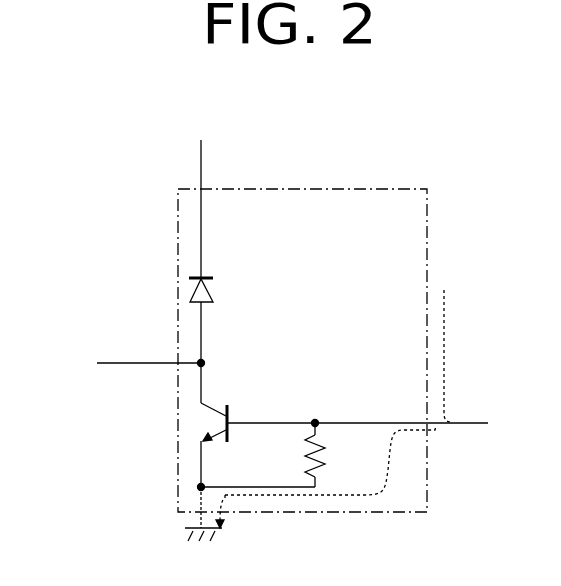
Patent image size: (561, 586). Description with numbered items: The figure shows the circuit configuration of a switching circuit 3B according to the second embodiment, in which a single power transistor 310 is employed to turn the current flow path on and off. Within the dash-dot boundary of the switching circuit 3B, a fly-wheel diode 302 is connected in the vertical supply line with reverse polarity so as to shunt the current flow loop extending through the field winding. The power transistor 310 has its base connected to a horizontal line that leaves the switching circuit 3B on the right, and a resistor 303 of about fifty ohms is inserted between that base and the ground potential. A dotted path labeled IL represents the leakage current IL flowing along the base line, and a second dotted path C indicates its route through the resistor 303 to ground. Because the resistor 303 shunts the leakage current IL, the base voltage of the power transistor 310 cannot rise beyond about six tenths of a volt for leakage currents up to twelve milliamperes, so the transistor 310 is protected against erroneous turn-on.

The switching circuit 3B is at (306, 187).
The fly-wheel diode 302 is at (213, 288).
The power transistor 310 is at (212, 402).
The resistor 303 is at (324, 456).
The leakage current IL is at (457, 354).
The current path C is at (453, 423).